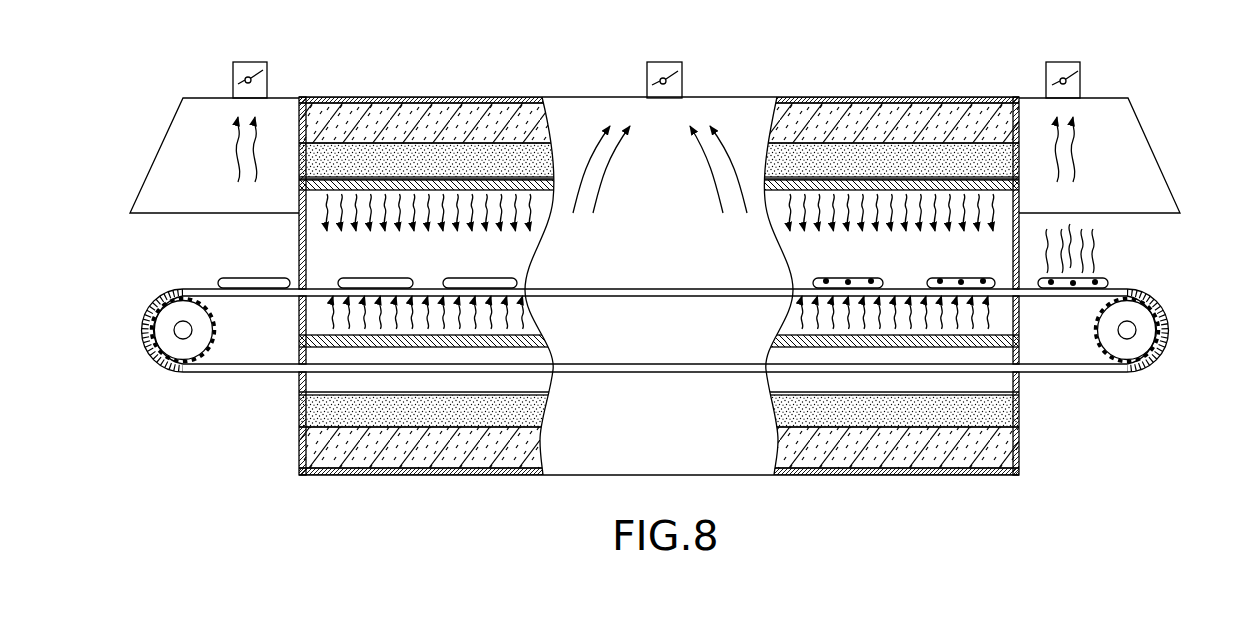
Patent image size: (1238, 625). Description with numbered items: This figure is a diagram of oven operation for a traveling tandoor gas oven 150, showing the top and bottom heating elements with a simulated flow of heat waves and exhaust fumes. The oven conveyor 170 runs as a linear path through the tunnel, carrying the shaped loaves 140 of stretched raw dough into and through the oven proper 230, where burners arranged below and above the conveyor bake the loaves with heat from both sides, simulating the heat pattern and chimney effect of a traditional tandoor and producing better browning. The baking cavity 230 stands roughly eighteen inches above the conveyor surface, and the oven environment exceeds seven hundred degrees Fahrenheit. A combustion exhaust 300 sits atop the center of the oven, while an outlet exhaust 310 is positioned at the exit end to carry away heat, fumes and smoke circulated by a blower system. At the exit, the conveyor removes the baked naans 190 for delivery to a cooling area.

The shaped loaves 140 is at (245, 290).
The traveling tandoor gas oven 150 is at (683, 194).
The oven conveyor 170 is at (192, 290).
The baked naans 190 is at (1113, 276).
The oven proper (baking cavity) 230 is at (268, 62).
The combustion exhaust 300 is at (683, 62).
The outlet exhaust 310 is at (1083, 62).